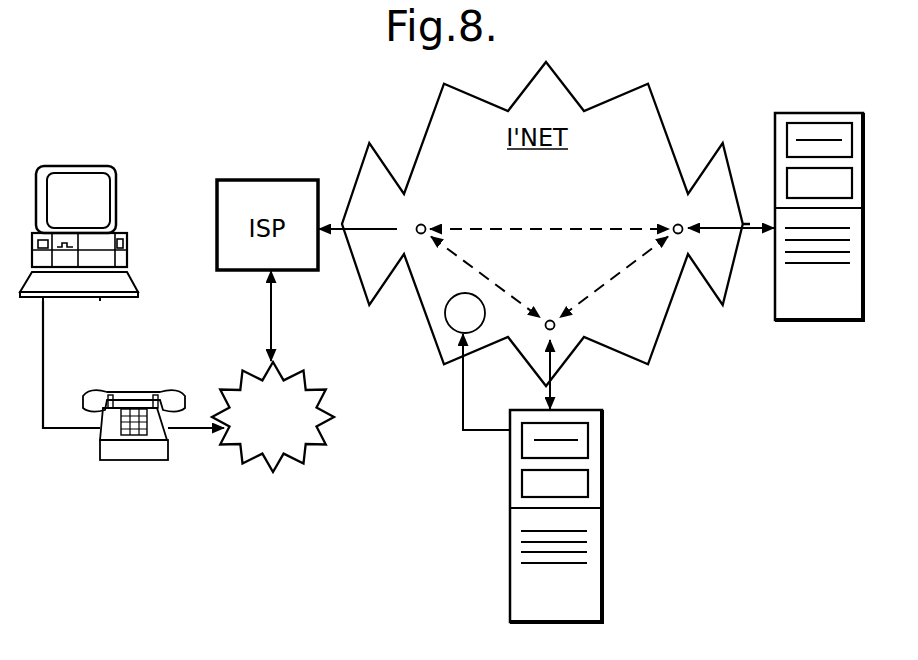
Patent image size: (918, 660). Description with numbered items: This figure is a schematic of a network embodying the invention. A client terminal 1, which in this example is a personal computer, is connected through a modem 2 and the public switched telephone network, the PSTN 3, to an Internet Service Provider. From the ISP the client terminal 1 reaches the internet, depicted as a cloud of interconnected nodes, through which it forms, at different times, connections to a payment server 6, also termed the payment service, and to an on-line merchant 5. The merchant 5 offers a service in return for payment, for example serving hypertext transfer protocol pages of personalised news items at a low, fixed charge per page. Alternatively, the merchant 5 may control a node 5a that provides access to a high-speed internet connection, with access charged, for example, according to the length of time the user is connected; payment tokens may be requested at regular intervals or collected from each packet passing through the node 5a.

The client terminal 1 is at (98, 298).
The modem 2 is at (140, 461).
The PSTN 3 is at (285, 455).
The on-line merchant 5 is at (602, 537).
The node 5a is at (465, 313).
The payment server 6 is at (813, 322).